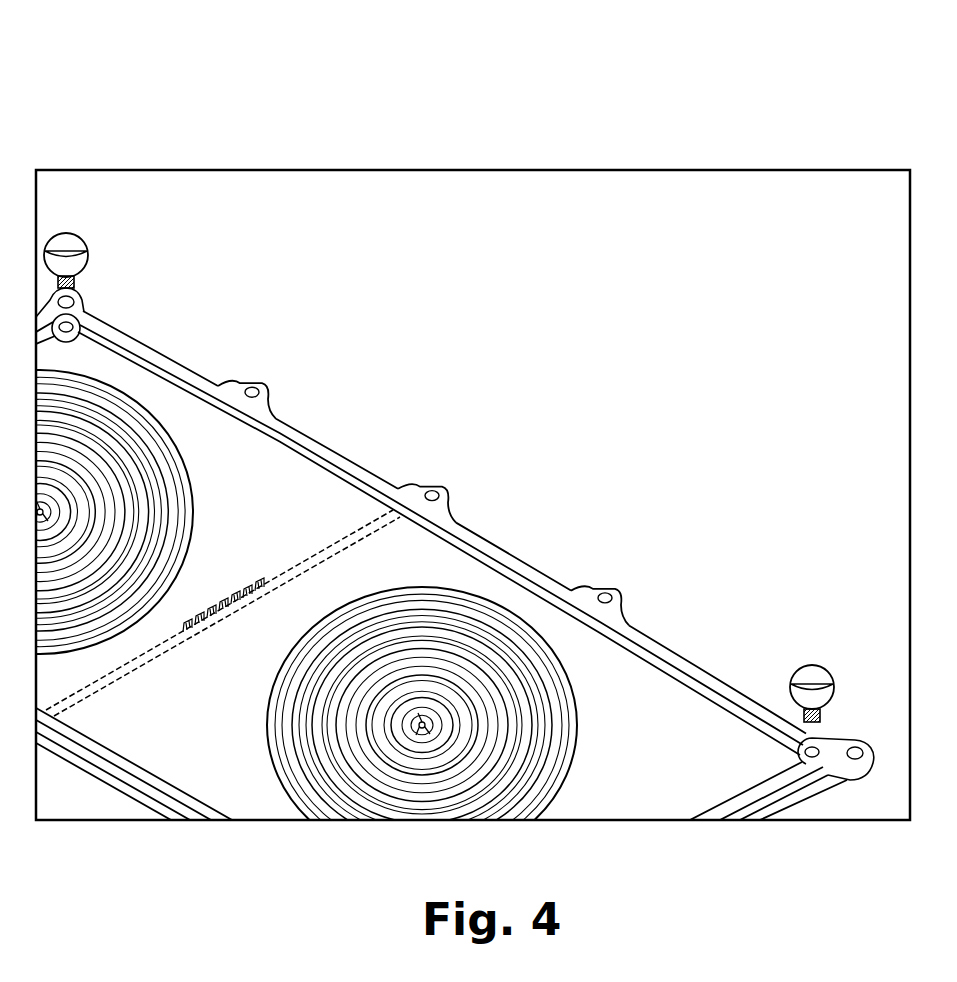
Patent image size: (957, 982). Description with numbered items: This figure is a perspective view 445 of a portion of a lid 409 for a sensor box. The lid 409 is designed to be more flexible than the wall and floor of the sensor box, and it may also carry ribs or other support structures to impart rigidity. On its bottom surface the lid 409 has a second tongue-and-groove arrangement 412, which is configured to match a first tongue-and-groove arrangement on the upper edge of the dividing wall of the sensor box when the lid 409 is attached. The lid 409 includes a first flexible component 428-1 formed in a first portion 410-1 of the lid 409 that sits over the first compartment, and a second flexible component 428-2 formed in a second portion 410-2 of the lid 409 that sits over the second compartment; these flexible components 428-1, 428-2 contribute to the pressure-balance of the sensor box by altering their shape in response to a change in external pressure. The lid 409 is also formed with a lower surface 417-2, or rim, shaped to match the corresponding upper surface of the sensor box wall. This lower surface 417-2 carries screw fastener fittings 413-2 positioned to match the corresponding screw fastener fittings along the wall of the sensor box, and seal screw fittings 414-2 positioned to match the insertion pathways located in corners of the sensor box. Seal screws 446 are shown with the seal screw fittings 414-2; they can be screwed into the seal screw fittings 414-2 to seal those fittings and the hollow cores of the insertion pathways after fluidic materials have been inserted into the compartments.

The perspective view 445 is at (192, 102).
The seal screws 446 is at (81, 246).
The seal screw fittings 414-2 is at (68, 322).
The second tongue-and-groove arrangement 412 is at (307, 555).
The second portion 410-2 is at (282, 480).
The second flexible component 428-2 is at (192, 487).
The lid 409 is at (455, 570).
The screw fastener fittings 413-2 is at (605, 586).
The lower surface 417-2 is at (706, 665).
The first portion 410-1 is at (712, 740).
The first flexible component 428-1 is at (270, 694).